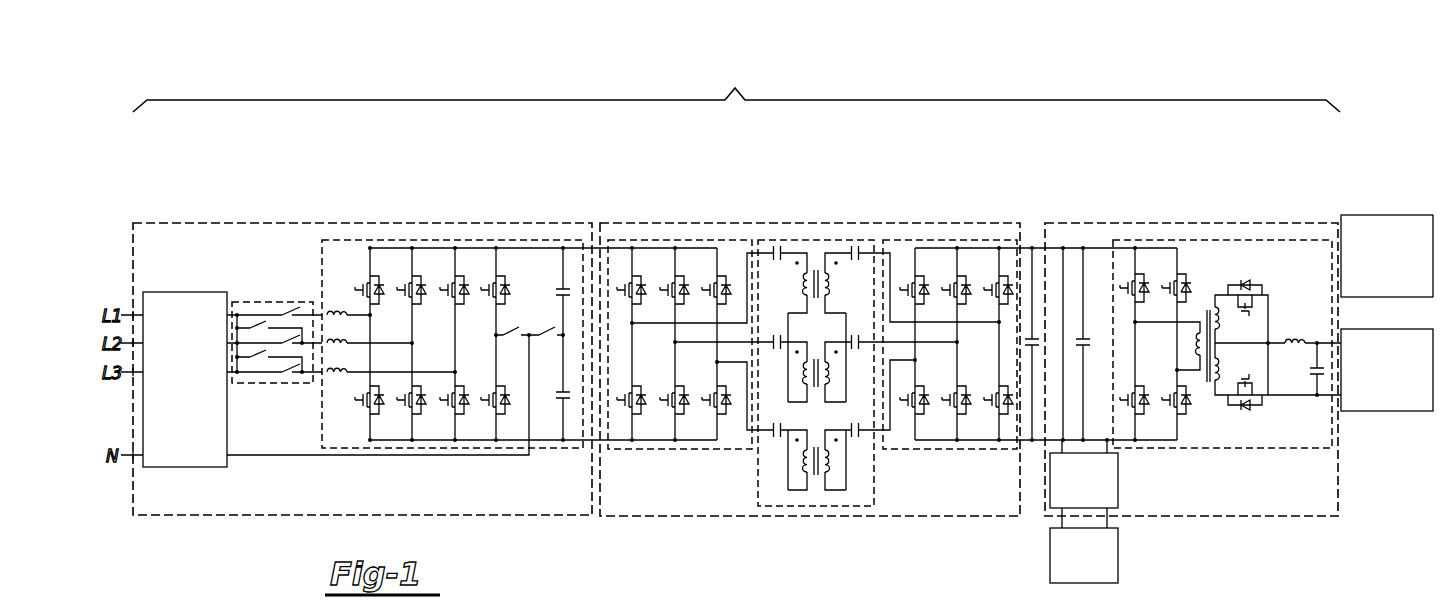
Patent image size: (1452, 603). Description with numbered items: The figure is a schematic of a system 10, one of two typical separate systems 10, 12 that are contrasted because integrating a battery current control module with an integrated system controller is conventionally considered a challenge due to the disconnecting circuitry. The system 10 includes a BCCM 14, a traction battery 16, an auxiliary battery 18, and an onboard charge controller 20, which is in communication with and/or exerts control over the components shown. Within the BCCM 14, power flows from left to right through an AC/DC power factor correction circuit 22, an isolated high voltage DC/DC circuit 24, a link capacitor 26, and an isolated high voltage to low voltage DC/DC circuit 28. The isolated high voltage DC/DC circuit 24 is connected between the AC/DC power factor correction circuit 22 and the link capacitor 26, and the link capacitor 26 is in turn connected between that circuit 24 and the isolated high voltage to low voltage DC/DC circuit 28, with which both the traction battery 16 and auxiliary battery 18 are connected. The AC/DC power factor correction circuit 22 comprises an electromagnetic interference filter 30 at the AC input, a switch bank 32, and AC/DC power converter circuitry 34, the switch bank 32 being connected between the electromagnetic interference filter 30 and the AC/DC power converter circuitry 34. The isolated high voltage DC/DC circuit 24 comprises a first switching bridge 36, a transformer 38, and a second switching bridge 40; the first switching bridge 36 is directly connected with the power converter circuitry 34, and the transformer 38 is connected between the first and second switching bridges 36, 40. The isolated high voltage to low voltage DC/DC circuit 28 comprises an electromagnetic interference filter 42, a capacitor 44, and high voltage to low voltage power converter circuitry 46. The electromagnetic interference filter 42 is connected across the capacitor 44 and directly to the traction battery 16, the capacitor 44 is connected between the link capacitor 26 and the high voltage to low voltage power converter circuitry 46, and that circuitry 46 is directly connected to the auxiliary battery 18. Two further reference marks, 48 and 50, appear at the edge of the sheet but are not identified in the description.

The system 10 is at (188, 82).
The system 12 is at (1265, 602).
The BCCM 14 is at (735, 288).
The traction battery 16 is at (1120, 557).
The auxiliary battery 18 is at (1386, 413).
The onboard charge controller 20 is at (1388, 215).
The AC/DC power factor correction circuit 22 is at (362, 223).
The isolated high voltage DC/DC circuit 24 is at (808, 223).
The link capacitor 26 is at (1028, 345).
The isolated high voltage to low voltage DC/DC circuit 28 is at (1190, 223).
The electromagnetic interference filter 30 is at (186, 292).
The switch bank 32 is at (272, 302).
The AC/DC power converter circuitry 34 is at (452, 240).
The first switching bridge 36 is at (678, 449).
The transformer 38 is at (817, 516).
The second switching bridge 40 is at (950, 449).
The electromagnetic interference filter 42 is at (1120, 481).
The capacitor 44 is at (1085, 350).
The high voltage to low voltage power converter circuitry 46 is at (1225, 240).
The controller 48 is at (495, 600).
The communication link 50 is at (770, 602).